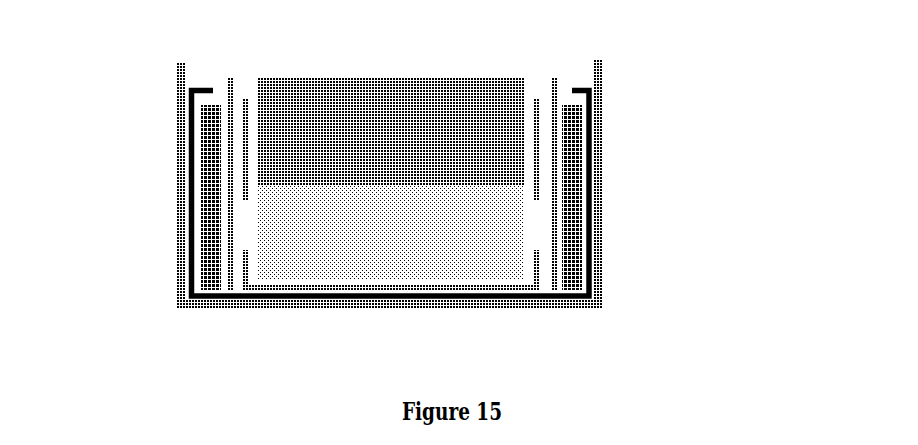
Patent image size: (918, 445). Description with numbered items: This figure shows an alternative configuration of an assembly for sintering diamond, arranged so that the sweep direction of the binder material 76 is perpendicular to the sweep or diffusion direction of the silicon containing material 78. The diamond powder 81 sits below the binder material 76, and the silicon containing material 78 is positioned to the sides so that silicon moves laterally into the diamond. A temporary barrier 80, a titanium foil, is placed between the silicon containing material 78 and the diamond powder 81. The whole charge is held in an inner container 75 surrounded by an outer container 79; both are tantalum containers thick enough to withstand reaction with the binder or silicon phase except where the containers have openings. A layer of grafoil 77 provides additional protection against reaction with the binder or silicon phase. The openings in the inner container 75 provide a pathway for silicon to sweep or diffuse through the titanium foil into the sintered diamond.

The inner container 75 is at (239, 115).
The binder material 76 is at (391, 131).
The grafoil 77 is at (582, 83).
The silicon containing material 78 is at (593, 279).
The outer container 79 is at (168, 94).
The temporary barrier 80 is at (569, 110).
The diamond powder 81 is at (488, 236).